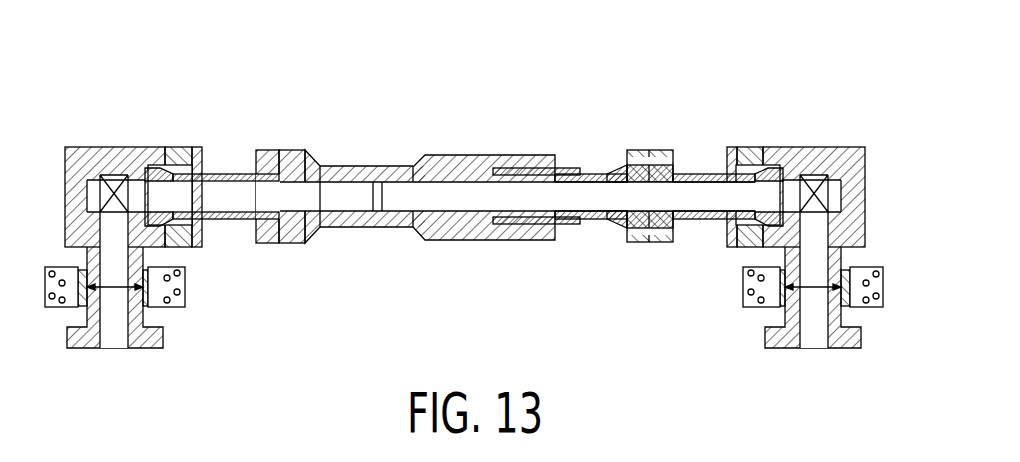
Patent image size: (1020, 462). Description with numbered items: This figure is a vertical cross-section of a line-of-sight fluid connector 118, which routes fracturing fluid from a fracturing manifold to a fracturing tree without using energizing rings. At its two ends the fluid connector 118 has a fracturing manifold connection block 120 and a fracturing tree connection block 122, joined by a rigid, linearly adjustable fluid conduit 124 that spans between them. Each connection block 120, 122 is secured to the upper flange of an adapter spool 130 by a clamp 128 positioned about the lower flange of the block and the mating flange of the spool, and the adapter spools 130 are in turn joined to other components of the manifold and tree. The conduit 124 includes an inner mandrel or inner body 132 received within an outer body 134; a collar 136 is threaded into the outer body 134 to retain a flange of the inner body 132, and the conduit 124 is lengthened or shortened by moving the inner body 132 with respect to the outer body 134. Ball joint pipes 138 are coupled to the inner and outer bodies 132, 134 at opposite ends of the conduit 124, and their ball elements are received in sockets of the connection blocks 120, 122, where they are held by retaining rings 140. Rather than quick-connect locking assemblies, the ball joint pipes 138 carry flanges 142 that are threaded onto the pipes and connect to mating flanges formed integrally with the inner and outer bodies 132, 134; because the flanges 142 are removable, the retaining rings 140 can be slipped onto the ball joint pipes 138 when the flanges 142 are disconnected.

The fluid connector 118 is at (557, 83).
The fracturing manifold connection block 120 is at (85, 147).
The fracturing tree connection block 122 is at (865, 177).
The fluid conduit 124 is at (397, 228).
The clamp 128 is at (46, 287).
The adapter spool 130 is at (143, 320).
The inner body 132 is at (605, 172).
The outer body 134 is at (437, 155).
The collar 136 is at (568, 166).
The ball joint pipe 138 is at (228, 172).
The retaining ring 140 is at (178, 147).
The flange 142 is at (270, 150).